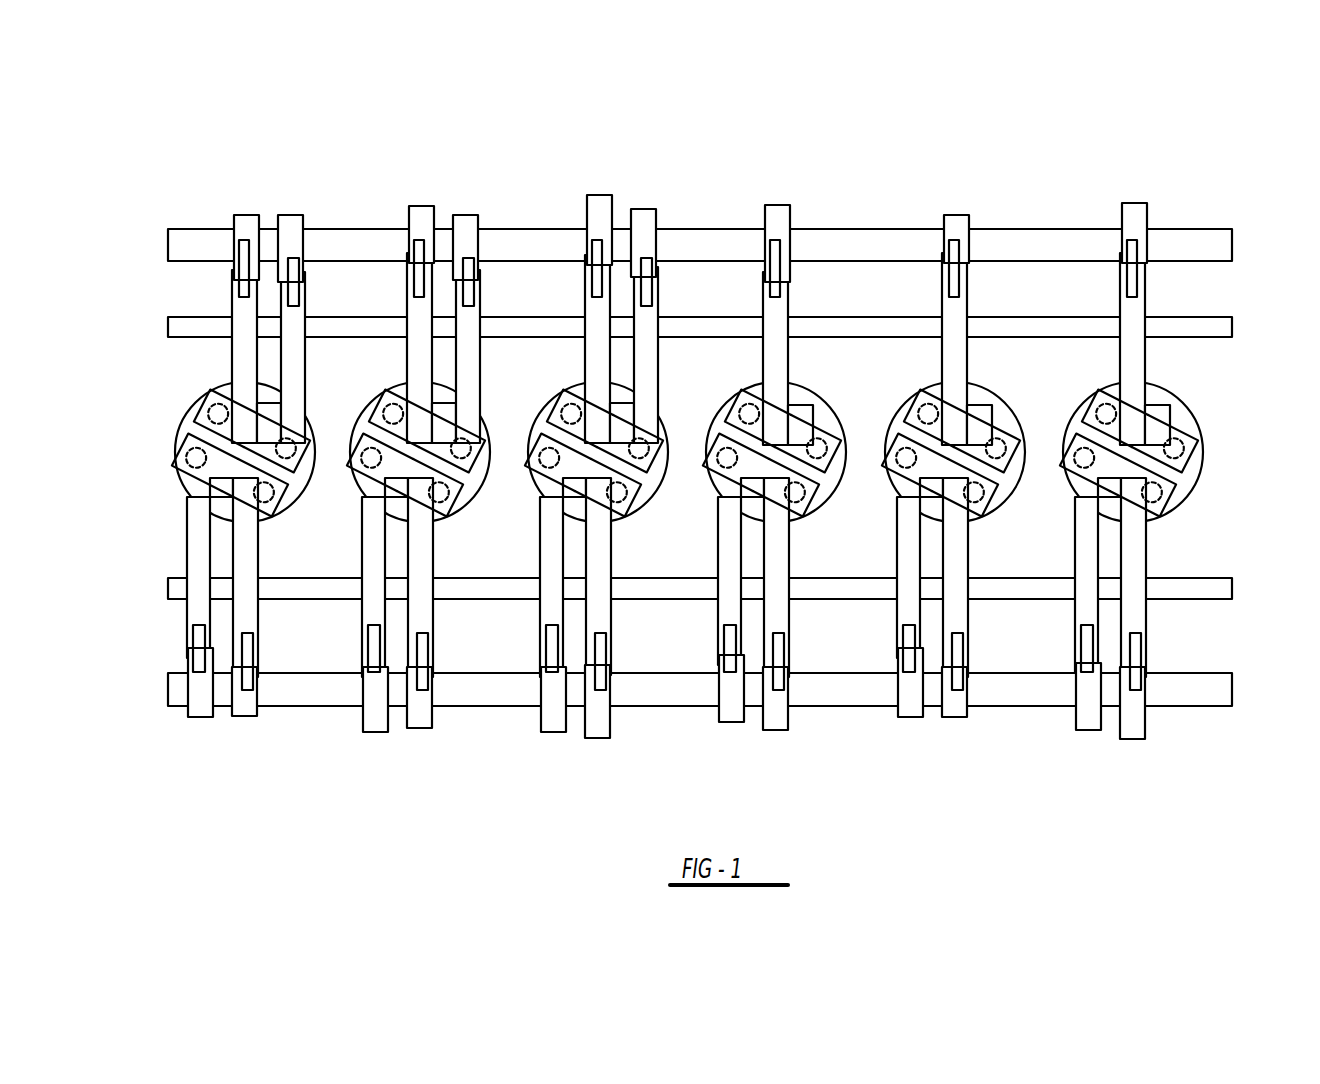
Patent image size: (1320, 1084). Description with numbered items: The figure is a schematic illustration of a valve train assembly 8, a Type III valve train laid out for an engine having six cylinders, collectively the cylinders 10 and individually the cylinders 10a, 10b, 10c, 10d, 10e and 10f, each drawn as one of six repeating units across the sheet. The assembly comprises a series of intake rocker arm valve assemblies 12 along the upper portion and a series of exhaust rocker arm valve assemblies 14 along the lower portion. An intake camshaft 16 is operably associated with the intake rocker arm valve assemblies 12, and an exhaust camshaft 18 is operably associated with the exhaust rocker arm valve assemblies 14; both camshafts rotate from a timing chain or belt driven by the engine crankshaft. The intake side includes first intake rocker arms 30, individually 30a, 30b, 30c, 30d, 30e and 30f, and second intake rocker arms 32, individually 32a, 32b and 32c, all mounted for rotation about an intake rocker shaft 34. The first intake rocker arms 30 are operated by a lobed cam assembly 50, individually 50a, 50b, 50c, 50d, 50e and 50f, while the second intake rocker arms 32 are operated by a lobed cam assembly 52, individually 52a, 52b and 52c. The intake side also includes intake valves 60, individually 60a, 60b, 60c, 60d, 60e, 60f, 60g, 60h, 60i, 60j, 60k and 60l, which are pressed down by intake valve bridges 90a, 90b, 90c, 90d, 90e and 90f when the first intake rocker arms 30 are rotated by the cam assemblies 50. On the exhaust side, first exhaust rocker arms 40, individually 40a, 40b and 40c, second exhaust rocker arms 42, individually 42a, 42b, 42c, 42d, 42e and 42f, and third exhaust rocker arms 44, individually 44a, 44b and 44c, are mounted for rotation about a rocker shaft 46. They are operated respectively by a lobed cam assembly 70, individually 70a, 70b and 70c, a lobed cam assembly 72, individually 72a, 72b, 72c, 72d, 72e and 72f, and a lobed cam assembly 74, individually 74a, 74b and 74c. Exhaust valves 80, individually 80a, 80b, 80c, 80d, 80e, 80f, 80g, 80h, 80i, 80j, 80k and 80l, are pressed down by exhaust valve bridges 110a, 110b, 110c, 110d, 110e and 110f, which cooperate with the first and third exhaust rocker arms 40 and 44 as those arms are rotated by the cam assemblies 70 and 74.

The valve train assembly 8 is at (701, 462).
The cylinders 10 is at (207, 452).
The cylinder 10a is at (180, 487).
The cylinder 10b is at (490, 386).
The cylinder 10c is at (660, 386).
The cylinder 10d is at (803, 388).
The cylinder 10e is at (980, 388).
The cylinder 10f is at (1175, 390).
The intake rocker arm valve assemblies 12 is at (706, 250).
The exhaust rocker arm valve assemblies 14 is at (707, 665).
The intake camshaft 16 is at (717, 234).
The exhaust camshaft 18 is at (487, 712).
The first intake rocker arms 30 is at (201, 355).
The first intake rocker arm 30a is at (217, 367).
The first intake rocker arm 30b is at (306, 308).
The first intake rocker arm 30c is at (590, 306).
The first intake rocker arm 30d is at (770, 307).
The first intake rocker arm 30e is at (958, 308).
The first intake rocker arm 30f is at (1130, 308).
The second intake rocker arms 32 is at (348, 354).
The second intake rocker arm 32a is at (415, 345).
The second intake rocker arm 32b is at (466, 313).
The second intake rocker arm 32c is at (652, 308).
The intake rocker shaft 34 is at (1235, 325).
The first exhaust rocker arms 40 is at (268, 577).
The first exhaust rocker arm 40a is at (258, 562).
The first exhaust rocker arm 40b is at (428, 610).
The first exhaust rocker arm 40c is at (607, 618).
The second exhaust rocker arms 42 is at (160, 577).
The second exhaust rocker arm 42a is at (190, 542).
The second exhaust rocker arm 42b is at (362, 612).
The second exhaust rocker arm 42c is at (545, 614).
The second exhaust rocker arm 42d is at (722, 612).
The second exhaust rocker arm 42e is at (898, 592).
The second exhaust rocker arm 42f is at (1080, 610).
The third exhaust rocker arms 44 is at (801, 577).
The third exhaust rocker arm 44a is at (783, 604).
The third exhaust rocker arm 44b is at (960, 622).
The third exhaust rocker arm 44c is at (1140, 618).
The rocker shaft 46 is at (1235, 592).
The lobed cam assembly 50 is at (211, 202).
The lobed cam assembly 50a is at (243, 222).
The lobed cam assembly 50b is at (425, 217).
The lobed cam assembly 50c is at (598, 204).
The lobed cam assembly 50d is at (784, 212).
The lobed cam assembly 50e is at (957, 215).
The lobed cam assembly 50f is at (1135, 213).
The lobed cam assembly 52 is at (319, 211).
The lobed cam assembly 52a is at (300, 223).
The lobed cam assembly 52b is at (465, 225).
The lobed cam assembly 52c is at (645, 217).
The intake valves 60 is at (1219, 436).
The intake valve 60a is at (190, 420).
The intake valve 60b is at (300, 478).
The intake valve 60c is at (380, 406).
The intake valve 60d is at (475, 478).
The intake valve 60e is at (555, 404).
The intake valve 60f is at (652, 478).
The intake valve 60g is at (733, 404).
The intake valve 60h is at (830, 478).
The intake valve 60i is at (912, 406).
The intake valve 60j is at (1010, 478).
The intake valve 60k is at (1090, 408).
The intake valve 60l is at (1195, 475).
The lobed cam assembly 70 is at (281, 714).
The lobed cam assembly 70a is at (245, 716).
The lobed cam assembly 70b is at (422, 730).
The lobed cam assembly 70c is at (602, 740).
The lobed cam assembly 72 is at (201, 718).
The lobed cam assembly 72a is at (205, 716).
The lobed cam assembly 72b is at (378, 734).
The lobed cam assembly 72c is at (556, 734).
The lobed cam assembly 72d is at (732, 728).
The lobed cam assembly 72e is at (908, 732).
The lobed cam assembly 72f is at (1092, 732).
The lobed cam assembly 74 is at (817, 714).
The lobed cam assembly 74a is at (776, 734).
The lobed cam assembly 74b is at (955, 732).
The lobed cam assembly 74c is at (1140, 740).
The exhaust valves 80 is at (1204, 500).
The exhaust valve 80a is at (180, 462).
The exhaust valve 80b is at (267, 510).
The exhaust valve 80c is at (366, 458).
The exhaust valve 80d is at (444, 510).
The exhaust valve 80e is at (540, 453).
The exhaust valve 80f is at (622, 510).
The exhaust valve 80g is at (712, 452).
The exhaust valve 80h is at (800, 510).
The exhaust valve 80i is at (890, 452).
The exhaust valve 80j is at (977, 510).
The exhaust valve 80k is at (1068, 452).
The exhaust valve 80l is at (1155, 510).
The intake valve bridge 90a is at (311, 436).
The intake valve bridge 90b is at (487, 440).
The intake valve bridge 90c is at (665, 437).
The intake valve bridge 90d is at (843, 437).
The intake valve bridge 90e is at (1020, 437).
The intake valve bridge 90f is at (1196, 437).
The exhaust valve bridge 110a is at (278, 516).
The exhaust valve bridge 110b is at (455, 516).
The exhaust valve bridge 110c is at (633, 516).
The exhaust valve bridge 110d is at (810, 516).
The exhaust valve bridge 110e is at (988, 516).
The exhaust valve bridge 110f is at (1166, 516).